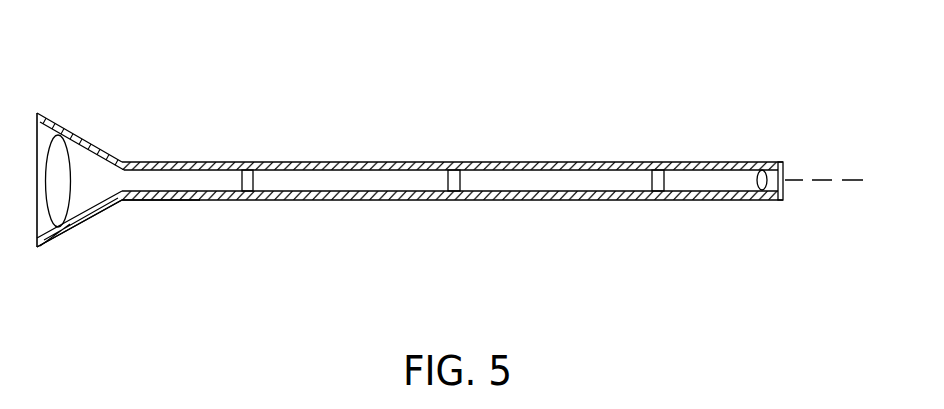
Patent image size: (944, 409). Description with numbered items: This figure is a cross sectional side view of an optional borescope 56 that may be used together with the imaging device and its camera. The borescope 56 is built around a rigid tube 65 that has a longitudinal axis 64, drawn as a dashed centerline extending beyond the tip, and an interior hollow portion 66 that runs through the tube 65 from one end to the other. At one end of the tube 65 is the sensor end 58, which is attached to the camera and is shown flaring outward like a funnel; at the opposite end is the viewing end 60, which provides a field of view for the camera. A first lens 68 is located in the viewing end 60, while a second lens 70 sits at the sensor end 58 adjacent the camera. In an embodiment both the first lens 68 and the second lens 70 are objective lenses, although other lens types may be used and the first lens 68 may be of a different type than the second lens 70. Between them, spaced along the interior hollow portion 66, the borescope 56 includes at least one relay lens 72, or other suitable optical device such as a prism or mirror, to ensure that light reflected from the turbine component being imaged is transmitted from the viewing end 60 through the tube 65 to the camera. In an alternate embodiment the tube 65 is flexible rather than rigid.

The borescope 56 is at (483, 162).
The sensor end 58 is at (38, 114).
The viewing end 60 is at (803, 148).
The longitudinal axis 64 is at (822, 183).
The rigid tube 65 is at (242, 203).
The interior hollow portion 66 is at (415, 180).
The first lens 68 is at (757, 162).
The second lens 70 is at (73, 177).
The relay lens 72 is at (250, 162).